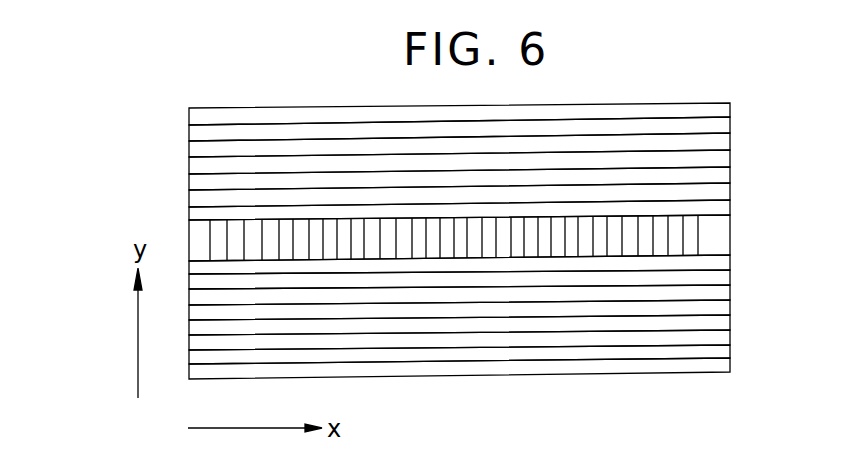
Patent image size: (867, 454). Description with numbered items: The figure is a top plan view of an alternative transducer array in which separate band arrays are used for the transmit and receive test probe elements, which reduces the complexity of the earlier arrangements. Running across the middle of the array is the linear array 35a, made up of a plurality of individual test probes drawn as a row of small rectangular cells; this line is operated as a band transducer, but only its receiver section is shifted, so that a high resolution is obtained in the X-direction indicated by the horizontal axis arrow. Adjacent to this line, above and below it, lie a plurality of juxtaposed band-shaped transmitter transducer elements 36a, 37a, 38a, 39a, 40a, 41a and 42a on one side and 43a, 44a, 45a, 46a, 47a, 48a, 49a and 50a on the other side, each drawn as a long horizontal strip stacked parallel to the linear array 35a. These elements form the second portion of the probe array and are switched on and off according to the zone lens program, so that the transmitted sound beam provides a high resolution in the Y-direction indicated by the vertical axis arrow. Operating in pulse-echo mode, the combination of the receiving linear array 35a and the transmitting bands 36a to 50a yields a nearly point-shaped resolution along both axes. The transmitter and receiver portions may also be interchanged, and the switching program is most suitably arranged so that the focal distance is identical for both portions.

The linear array 35a is at (722, 243).
The band-shaped transmitter transducer element 36a is at (709, 111).
The band-shaped transmitter transducer element 37a is at (730, 118).
The band-shaped transmitter transducer element 38a is at (730, 134).
The band-shaped transmitter transducer element 39a is at (730, 151).
The band-shaped transmitter transducer element 40a is at (730, 168).
The band-shaped transmitter transducer element 41a is at (730, 184).
The band-shaped transmitter transducer element 42a is at (730, 200).
The band-shaped transmitter transducer element 43a is at (730, 256).
The band-shaped transmitter transducer element 44a is at (730, 270).
The band-shaped transmitter transducer element 45a is at (728, 284).
The band-shaped transmitter transducer element 46a is at (728, 300).
The band-shaped transmitter transducer element 47a is at (728, 315).
The band-shaped transmitter transducer element 48a is at (728, 330).
The band-shaped transmitter transducer element 49a is at (722, 347).
The band-shaped transmitter transducer element 50a is at (718, 365).